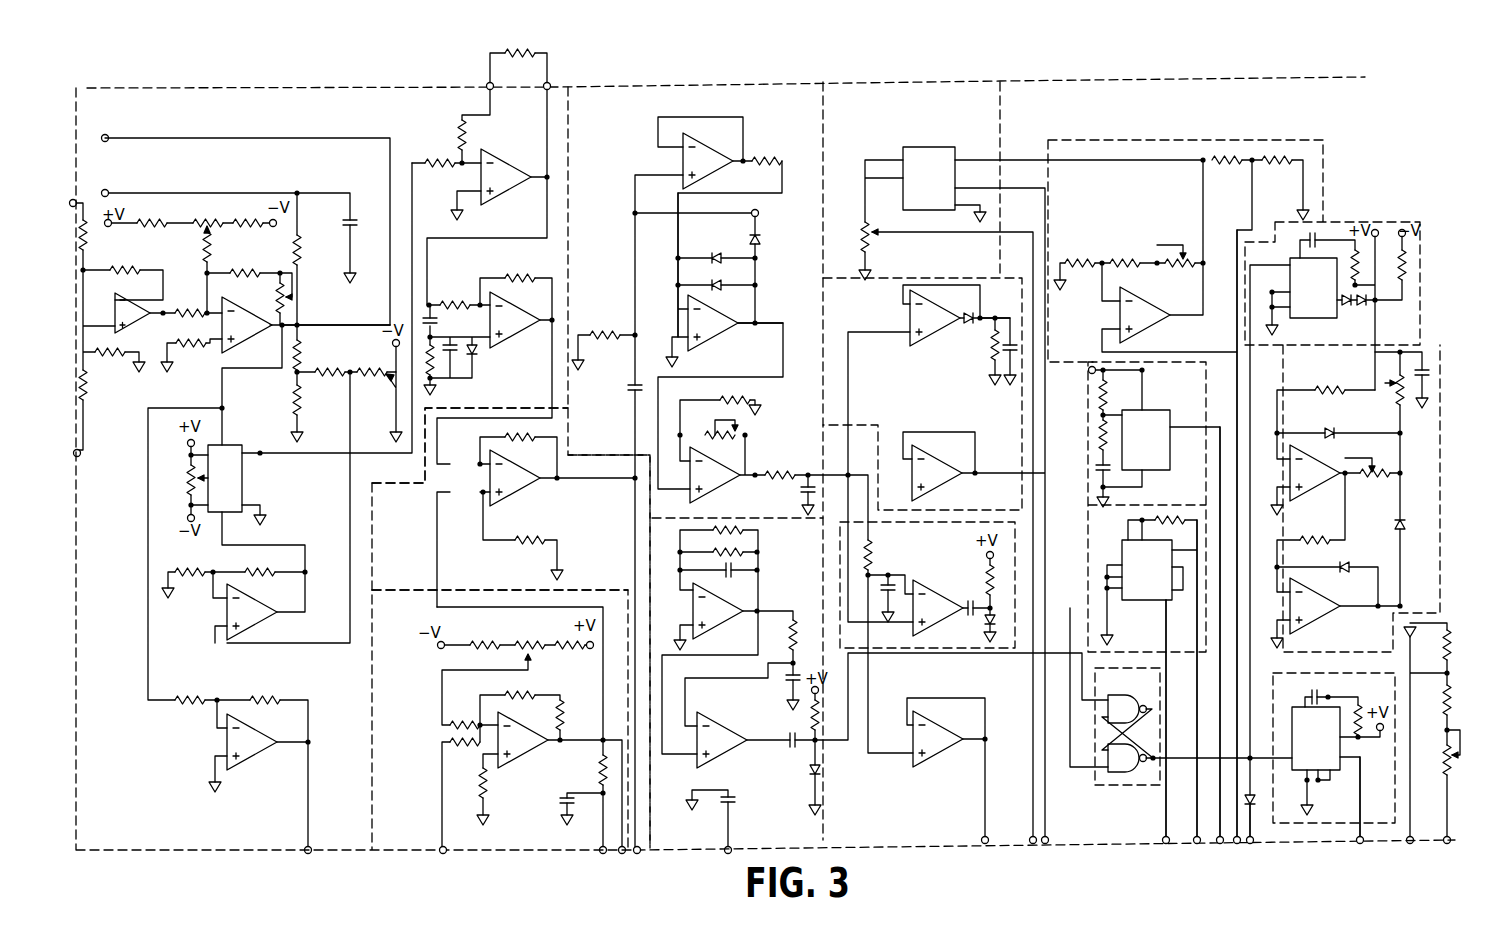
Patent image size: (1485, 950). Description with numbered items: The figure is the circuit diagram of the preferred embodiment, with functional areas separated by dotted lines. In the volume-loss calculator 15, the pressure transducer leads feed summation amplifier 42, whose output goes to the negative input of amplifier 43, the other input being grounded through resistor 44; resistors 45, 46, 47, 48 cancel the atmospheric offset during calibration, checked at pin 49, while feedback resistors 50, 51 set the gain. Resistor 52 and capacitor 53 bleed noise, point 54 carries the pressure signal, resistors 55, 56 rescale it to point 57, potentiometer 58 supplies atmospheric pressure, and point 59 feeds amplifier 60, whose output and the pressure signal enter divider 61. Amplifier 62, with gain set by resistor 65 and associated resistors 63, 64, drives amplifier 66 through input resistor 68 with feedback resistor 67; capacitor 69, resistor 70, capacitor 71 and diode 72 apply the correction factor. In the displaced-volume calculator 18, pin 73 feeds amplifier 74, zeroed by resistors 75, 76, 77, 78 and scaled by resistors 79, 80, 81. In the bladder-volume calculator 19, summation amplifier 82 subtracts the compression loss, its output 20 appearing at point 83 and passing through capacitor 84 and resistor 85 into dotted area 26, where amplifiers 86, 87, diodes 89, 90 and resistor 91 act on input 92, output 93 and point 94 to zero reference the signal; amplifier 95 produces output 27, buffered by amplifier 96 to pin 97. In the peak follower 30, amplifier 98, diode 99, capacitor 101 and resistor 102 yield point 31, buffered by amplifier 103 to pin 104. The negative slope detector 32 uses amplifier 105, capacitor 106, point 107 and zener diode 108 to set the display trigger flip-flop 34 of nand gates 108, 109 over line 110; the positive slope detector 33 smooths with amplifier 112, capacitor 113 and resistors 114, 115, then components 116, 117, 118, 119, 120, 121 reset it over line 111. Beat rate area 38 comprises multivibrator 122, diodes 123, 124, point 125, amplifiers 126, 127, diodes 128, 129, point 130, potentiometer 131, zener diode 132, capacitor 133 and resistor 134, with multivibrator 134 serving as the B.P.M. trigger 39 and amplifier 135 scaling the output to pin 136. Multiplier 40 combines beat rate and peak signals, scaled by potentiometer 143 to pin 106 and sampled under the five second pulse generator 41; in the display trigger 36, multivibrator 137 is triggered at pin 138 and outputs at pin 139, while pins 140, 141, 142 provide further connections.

The volume-loss calculator 15 is at (120, 514).
The displaced-volume calculator 18 is at (411, 676).
The bladder-volume calculator 19 is at (406, 552).
The output of amplifier 82 20 is at (558, 480).
The comparator circuit 26 is at (609, 252).
The output of amplifier 95 27 is at (759, 472).
The peak follower 30 is at (866, 321).
The point 31 is at (985, 315).
The negative slope detector 32 is at (921, 557).
The positive slope detector 33 is at (808, 578).
The display trigger flip-flop 34 is at (1128, 790).
The display trigger 36 is at (1147, 639).
The control circuit 38 is at (1129, 216).
The B.P.M. trigger 39 is at (1387, 696).
The flow rate multiplier 40 is at (929, 178).
The five second pulse generator 41 is at (1146, 440).
The summation amplifier 42 is at (132, 313).
The amplifier 43 is at (247, 325).
The resistor 44 is at (184, 354).
The resistor 45 is at (204, 245).
The resistor 46 is at (201, 219).
The resistor 47 is at (163, 220).
The resistor 48 is at (238, 219).
The pin 49 is at (106, 141).
The resistor 50 is at (256, 264).
The adjustable resistor 51 is at (274, 303).
The resistor 52 is at (305, 250).
The capacitor 53 is at (345, 222).
The point 54 is at (304, 324).
The resistor 55 is at (305, 354).
The resistor 56 is at (295, 409).
The point 57 is at (297, 380).
The potentiometer 58 is at (395, 390).
The point 59 is at (356, 366).
The amplifier 60 is at (252, 612).
The divider 61 is at (214, 478).
The amplifier 62 is at (506, 177).
The resistor 63 is at (490, 114).
The resistor 64 is at (440, 172).
The resistor 65 is at (517, 52).
The amplifier 66 is at (515, 320).
The feedback resistor 67 is at (526, 274).
The input resistor 68 is at (467, 300).
The capacitor 69 is at (441, 322).
The resistor 70 is at (436, 380).
The capacitor 71 is at (462, 356).
The diode 72 is at (476, 357).
The pin 73 is at (444, 853).
The amplifier 74 is at (523, 740).
The resistor 75 is at (492, 643).
The resistor 76 is at (534, 643).
The resistor 77 is at (561, 648).
The resistor 78 is at (449, 722).
The resistor 79 is at (563, 718).
The resistor 80 is at (527, 693).
The resistor 81 is at (472, 750).
The summation amplifier 82 is at (515, 478).
The point 83 is at (749, 242).
The capacitor 84 is at (630, 390).
The resistor 85 is at (614, 335).
The amplifier 86 is at (708, 161).
The amplifier 87 is at (713, 323).
The diode 89 is at (710, 256).
The diode 90 is at (725, 283).
The resistor 91 is at (762, 160).
The negative input 92 is at (677, 306).
The output 93 is at (753, 325).
The point 94 is at (758, 213).
The amplifier 95 is at (715, 475).
The amplifier 96 is at (938, 739).
The pin 97 is at (982, 844).
The amplifier 98 is at (935, 318).
The diode 99 is at (967, 314).
The capacitor 101 is at (1004, 353).
The resistor 102 is at (989, 340).
The amplifier 103 is at (937, 473).
The pin 104 is at (1045, 844).
The amplifier 105 is at (938, 608).
The capacitor 106 is at (968, 606).
The point 107 is at (987, 587).
The zener diode 108 is at (986, 625).
The nand gate 109 is at (1127, 709).
The input line 110 is at (1089, 770).
The input line 111 is at (849, 740).
The amplifier 112 is at (718, 611).
The capacitor 113 is at (722, 567).
The resistor 114 is at (739, 551).
The resistor 115 is at (736, 528).
The amplifying circuit component 116 is at (722, 740).
The amplifying circuit component 117 is at (794, 641).
The amplifying circuit component 118 is at (787, 681).
The amplifying circuit component 119 is at (810, 714).
The amplifying circuit component 120 is at (787, 746).
The amplifying circuit component 121 is at (809, 771).
The monostable multivibrator 122 is at (1313, 288).
The diode 123 is at (1346, 304).
The diode 124 is at (1362, 298).
The point 125 is at (1377, 302).
The amplifier 126 is at (1315, 473).
The amplifier 127 is at (1315, 606).
The diode 128 is at (1347, 566).
The diode 129 is at (1418, 519).
The point 130 is at (1402, 464).
The potentiometer 131 is at (1380, 476).
The zener diode 132 is at (1332, 430).
The capacitor 133 is at (1428, 372).
The resistor 134 is at (1387, 386).
The amplifier 135 is at (1145, 315).
The pin 136 is at (1237, 844).
The monostable multivibrator 137 is at (1147, 570).
The pin 138 is at (1164, 844).
The pin 139 is at (1196, 844).
The terminal 140 is at (1254, 844).
The terminal 141 is at (1361, 844).
The terminal 142 is at (1219, 844).
The potentiometer 143 is at (862, 239).